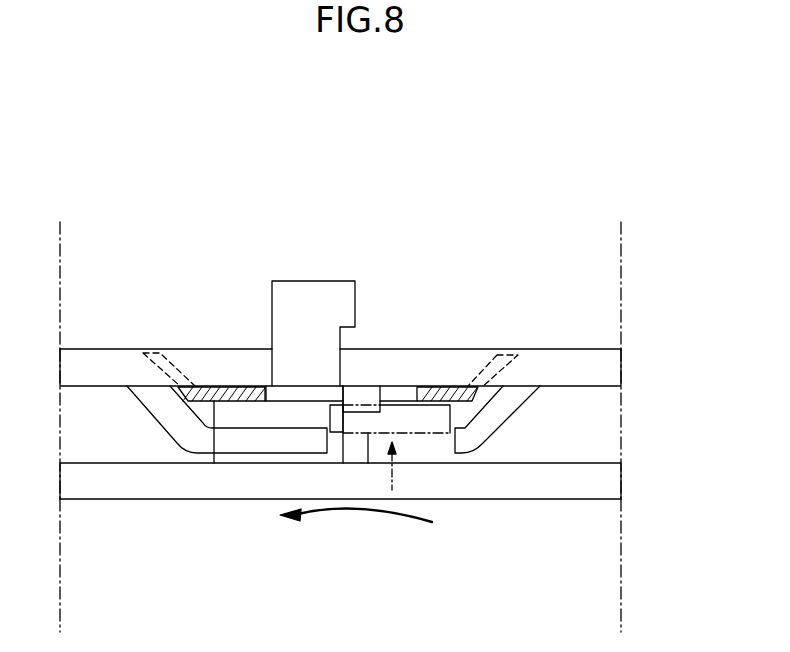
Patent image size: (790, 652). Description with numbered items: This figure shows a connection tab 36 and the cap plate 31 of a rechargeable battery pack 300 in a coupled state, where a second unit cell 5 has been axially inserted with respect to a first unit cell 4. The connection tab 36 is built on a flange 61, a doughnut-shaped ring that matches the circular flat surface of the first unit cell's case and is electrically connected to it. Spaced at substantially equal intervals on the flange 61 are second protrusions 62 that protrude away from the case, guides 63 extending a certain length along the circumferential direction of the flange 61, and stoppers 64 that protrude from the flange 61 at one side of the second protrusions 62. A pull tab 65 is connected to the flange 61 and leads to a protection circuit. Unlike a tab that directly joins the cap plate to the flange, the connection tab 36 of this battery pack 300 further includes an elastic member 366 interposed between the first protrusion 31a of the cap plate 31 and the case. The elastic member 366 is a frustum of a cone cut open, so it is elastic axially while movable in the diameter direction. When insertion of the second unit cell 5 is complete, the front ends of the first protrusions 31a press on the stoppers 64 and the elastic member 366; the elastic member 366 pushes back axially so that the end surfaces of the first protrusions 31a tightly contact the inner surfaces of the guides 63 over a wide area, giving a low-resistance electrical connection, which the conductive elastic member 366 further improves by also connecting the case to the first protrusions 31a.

The rechargeable battery pack 300 is at (345, 125).
The first unit cell 4 is at (588, 320).
The second unit cell 5 is at (588, 524).
The connection tab 36 is at (641, 367).
The cap plate 31 is at (641, 473).
The first protrusion 31a is at (308, 418).
The flange 61 is at (464, 360).
The second protrusion 62 is at (167, 413).
The guide 63 is at (237, 440).
The stopper 64 is at (368, 397).
The pull tab 65 is at (323, 292).
The elastic member 366 is at (228, 388).